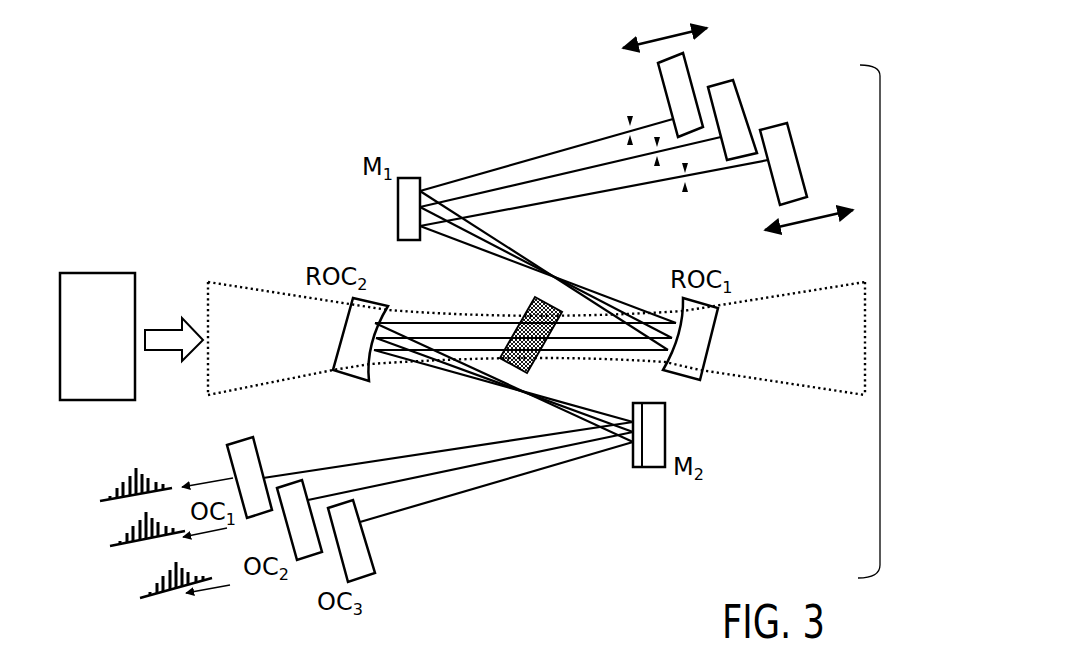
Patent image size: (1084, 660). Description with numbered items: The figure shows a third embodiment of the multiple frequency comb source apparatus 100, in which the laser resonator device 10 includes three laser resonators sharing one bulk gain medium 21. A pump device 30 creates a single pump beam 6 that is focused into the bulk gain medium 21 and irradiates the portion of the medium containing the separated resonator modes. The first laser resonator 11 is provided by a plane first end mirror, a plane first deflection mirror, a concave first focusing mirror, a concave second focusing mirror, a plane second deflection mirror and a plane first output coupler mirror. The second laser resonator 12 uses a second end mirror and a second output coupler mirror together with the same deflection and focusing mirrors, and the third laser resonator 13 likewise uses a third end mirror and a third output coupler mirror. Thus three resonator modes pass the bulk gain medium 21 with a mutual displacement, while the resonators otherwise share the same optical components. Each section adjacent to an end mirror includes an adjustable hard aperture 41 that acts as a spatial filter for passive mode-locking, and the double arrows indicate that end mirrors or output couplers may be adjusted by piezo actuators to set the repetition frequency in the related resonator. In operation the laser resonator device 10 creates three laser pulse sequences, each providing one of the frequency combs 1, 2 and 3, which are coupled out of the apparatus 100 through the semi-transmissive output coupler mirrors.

The multiple frequency comb source apparatus 100 is at (288, 150).
The pump device 30 is at (123, 315).
The pump beam 6 is at (207, 366).
The laser resonator device 10 is at (880, 322).
The bulk gain medium 21 is at (523, 316).
The first laser resonator 11 is at (557, 150).
The second laser resonator 12 is at (607, 163).
The third laser resonator 13 is at (557, 201).
The adjustable hard aperture 41 is at (628, 118).
The first frequency comb 1 is at (166, 476).
The second frequency comb 2 is at (160, 529).
The third frequency comb 3 is at (177, 578).